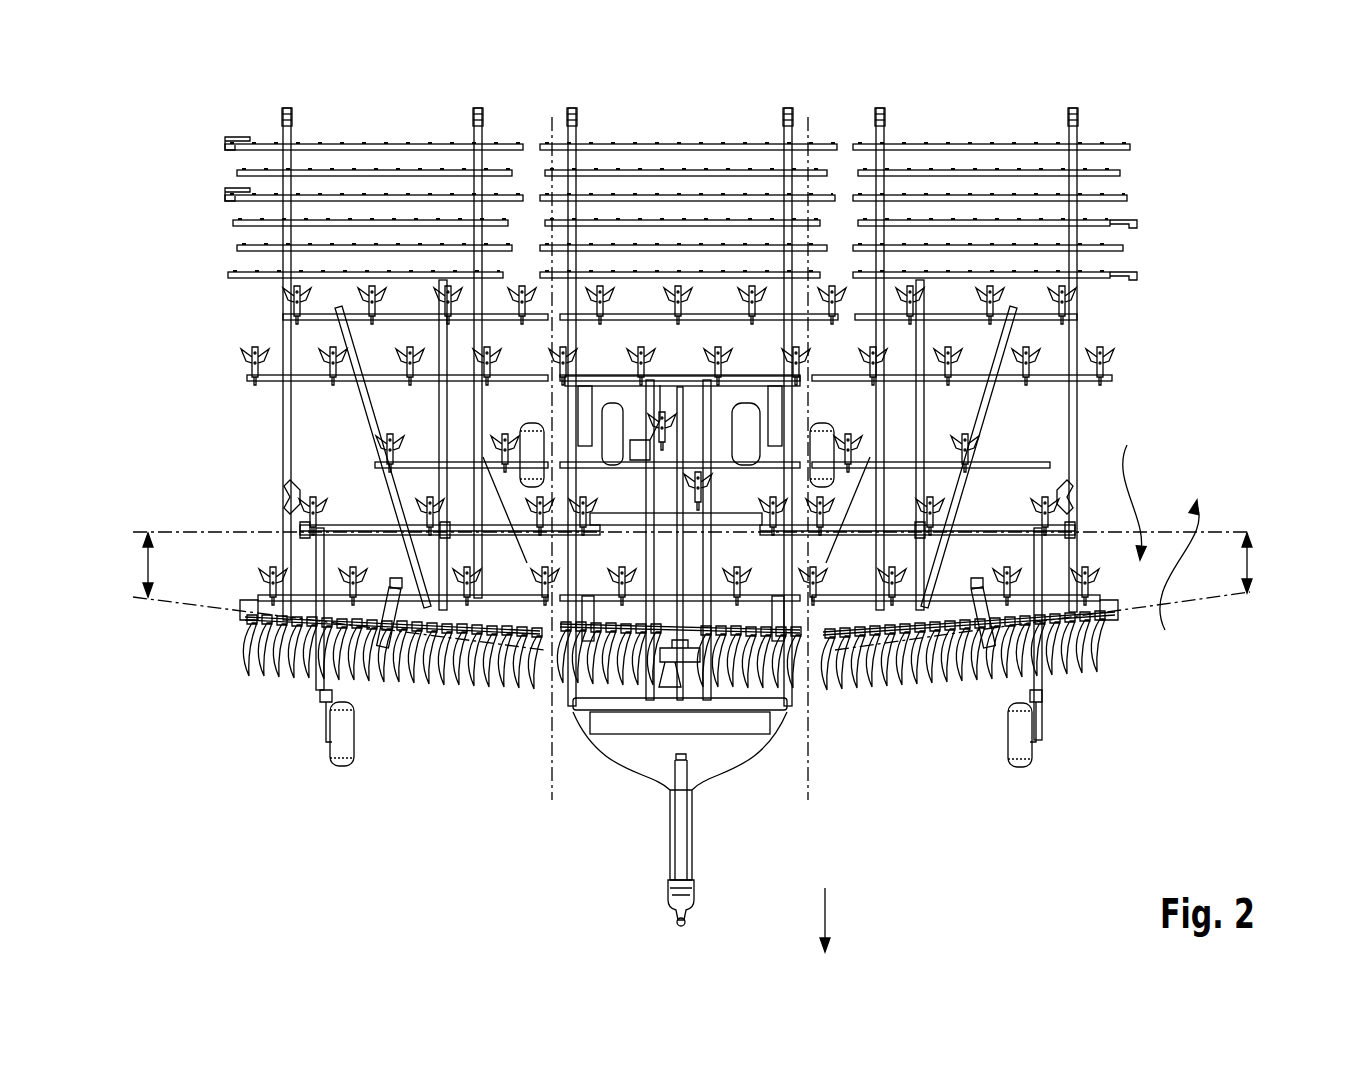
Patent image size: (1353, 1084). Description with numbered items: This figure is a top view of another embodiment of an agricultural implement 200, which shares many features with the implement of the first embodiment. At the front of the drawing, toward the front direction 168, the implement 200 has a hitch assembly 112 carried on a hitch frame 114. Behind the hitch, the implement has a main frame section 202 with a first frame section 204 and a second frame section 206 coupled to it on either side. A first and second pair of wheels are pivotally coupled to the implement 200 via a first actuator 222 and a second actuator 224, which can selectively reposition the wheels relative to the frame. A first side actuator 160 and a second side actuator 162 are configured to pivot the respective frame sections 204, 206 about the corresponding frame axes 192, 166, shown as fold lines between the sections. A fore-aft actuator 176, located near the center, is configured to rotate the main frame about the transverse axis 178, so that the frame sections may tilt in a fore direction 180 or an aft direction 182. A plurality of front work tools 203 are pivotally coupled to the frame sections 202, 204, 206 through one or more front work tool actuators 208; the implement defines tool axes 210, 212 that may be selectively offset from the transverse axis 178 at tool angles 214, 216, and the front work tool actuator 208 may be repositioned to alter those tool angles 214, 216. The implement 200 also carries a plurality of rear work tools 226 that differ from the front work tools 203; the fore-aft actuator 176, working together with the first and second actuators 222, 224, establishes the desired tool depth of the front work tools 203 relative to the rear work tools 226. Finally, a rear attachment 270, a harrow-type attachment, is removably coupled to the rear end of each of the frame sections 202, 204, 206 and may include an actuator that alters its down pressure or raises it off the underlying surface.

The implement 200 is at (1228, 146).
The main frame section 202 is at (808, 88).
The first frame section 204 is at (550, 88).
The second frame section 206 is at (1138, 88).
The rear attachment 270 is at (195, 130).
The second actuator 224 is at (580, 430).
The first actuator 222 is at (777, 430).
The rear work tools 226 is at (992, 305).
The first side actuator 160 is at (592, 536).
The second side actuator 162 is at (768, 536).
The fore direction 180 is at (1129, 486).
The transverse axis 178 is at (1220, 528).
The aft direction 182 is at (1175, 579).
The tool angle 214 is at (148, 565).
The tool angle 216 is at (1250, 560).
The tool axis 210 is at (192, 603).
The tool axis 212 is at (1205, 598).
The front work tools 203 is at (411, 700).
The frame axis 192 is at (552, 760).
The frame axis 166 is at (808, 760).
The fore-aft actuator 176 is at (678, 657).
The front work tool actuator 208 is at (790, 600).
The hitch frame 114 is at (688, 835).
The hitch assembly 112 is at (656, 921).
The front direction 168 is at (825, 905).